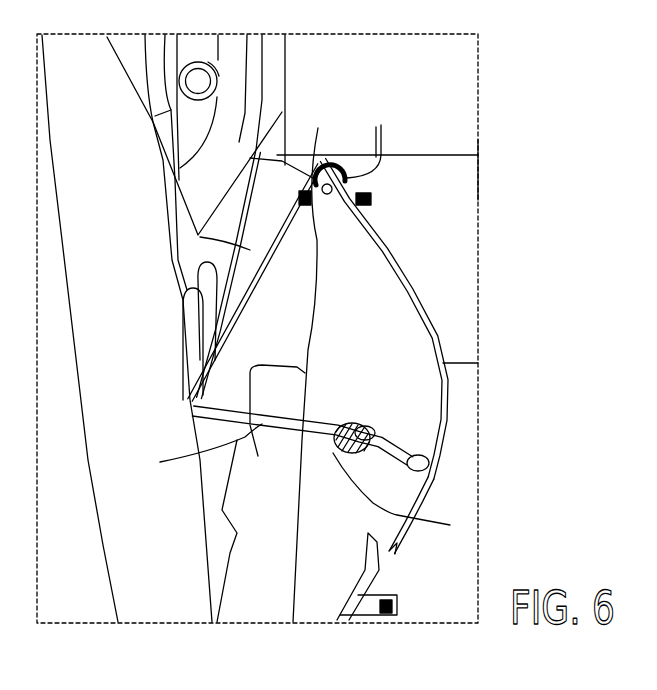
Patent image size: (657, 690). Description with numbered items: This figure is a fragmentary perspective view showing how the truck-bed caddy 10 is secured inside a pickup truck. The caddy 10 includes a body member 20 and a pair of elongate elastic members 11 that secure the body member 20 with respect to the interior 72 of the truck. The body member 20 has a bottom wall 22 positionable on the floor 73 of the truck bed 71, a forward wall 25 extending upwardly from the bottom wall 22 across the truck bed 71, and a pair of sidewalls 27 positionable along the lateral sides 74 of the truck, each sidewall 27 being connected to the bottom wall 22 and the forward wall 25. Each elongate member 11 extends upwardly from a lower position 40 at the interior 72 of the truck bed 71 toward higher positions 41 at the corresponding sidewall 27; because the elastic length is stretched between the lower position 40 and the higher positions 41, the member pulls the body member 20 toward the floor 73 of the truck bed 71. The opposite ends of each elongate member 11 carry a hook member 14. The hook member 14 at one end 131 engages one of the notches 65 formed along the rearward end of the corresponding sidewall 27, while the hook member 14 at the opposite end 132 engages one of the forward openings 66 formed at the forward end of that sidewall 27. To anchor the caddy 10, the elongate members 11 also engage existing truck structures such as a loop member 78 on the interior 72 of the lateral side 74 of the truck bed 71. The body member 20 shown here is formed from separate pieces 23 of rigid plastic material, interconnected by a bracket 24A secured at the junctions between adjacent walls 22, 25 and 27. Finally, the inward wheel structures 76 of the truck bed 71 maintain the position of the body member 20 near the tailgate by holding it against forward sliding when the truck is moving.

The caddy 10 is at (467, 440).
The elongate elastic members 11 is at (150, 461).
The hook member 14 is at (296, 162).
The body member 20 is at (448, 228).
The bottom wall 22 is at (465, 403).
The separate pieces 23 is at (369, 139).
The bracket 24A is at (372, 199).
The forward wall 25 is at (460, 173).
The sidewalls 27 is at (408, 264).
The lower position 40 is at (212, 421).
The higher positions 41 is at (348, 152).
The notches 65 is at (430, 472).
The forward openings 66 is at (326, 148).
The truck bed 71 is at (222, 274).
The interior 72 is at (250, 158).
The floor 73 is at (250, 587).
The lateral sides 74 is at (208, 483).
The inward wheel structures 76 is at (215, 228).
The loop member 78 is at (188, 392).
The one end 131 is at (450, 525).
The opposite end 132 is at (299, 199).